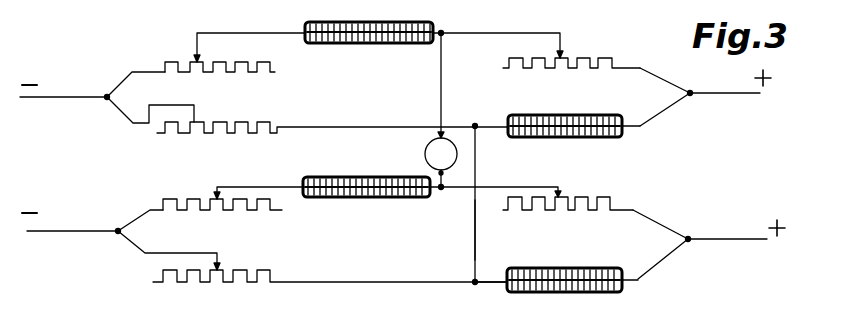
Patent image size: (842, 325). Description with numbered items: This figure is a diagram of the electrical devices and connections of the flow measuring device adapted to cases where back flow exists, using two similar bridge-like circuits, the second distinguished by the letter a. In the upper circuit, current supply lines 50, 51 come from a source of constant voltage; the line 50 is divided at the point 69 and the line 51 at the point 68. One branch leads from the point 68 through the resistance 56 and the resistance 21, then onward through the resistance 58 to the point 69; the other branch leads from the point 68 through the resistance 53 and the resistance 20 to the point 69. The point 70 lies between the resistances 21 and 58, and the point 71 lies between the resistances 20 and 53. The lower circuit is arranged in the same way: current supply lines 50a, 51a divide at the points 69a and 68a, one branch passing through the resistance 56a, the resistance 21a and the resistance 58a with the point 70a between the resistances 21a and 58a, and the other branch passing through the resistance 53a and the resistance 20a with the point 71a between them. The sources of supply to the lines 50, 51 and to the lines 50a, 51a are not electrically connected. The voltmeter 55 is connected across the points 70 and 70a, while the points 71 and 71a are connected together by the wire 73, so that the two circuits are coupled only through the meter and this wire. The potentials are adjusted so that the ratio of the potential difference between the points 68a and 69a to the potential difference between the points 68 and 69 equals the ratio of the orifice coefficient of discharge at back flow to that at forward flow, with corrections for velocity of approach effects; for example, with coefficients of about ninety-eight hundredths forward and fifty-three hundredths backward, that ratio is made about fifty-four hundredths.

The resistance 20 is at (564, 116).
The resistance 20a is at (582, 292).
The resistance 21 is at (380, 39).
The resistance 21a is at (371, 196).
The current supply line 50 is at (711, 93).
The current supply line 50a is at (726, 237).
The current supply line 51 is at (68, 93).
The current supply line 51a is at (71, 228).
The resistance 53 is at (332, 140).
The resistance 53a is at (253, 283).
The voltmeter 55 is at (425, 152).
The resistance 56 is at (220, 77).
The resistance 56a is at (250, 211).
The resistance 58 is at (568, 70).
The resistance 58a is at (573, 209).
The point 68 is at (113, 97).
The point 68a is at (124, 231).
The point 69 is at (686, 94).
The point 69a is at (684, 239).
The point 70 is at (442, 32).
The point 70a is at (441, 191).
The point 71 is at (477, 125).
The point 71a is at (475, 285).
The wire 73 is at (474, 238).